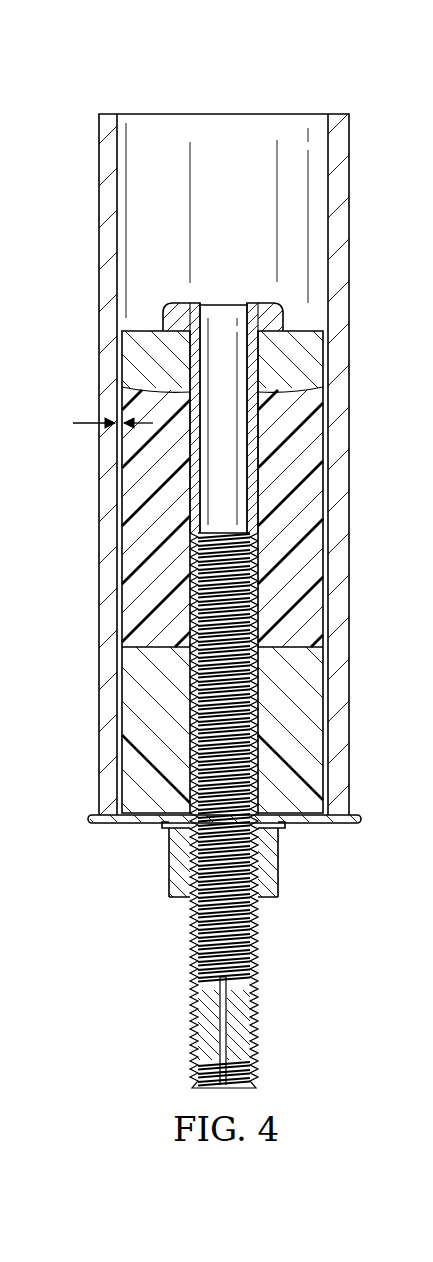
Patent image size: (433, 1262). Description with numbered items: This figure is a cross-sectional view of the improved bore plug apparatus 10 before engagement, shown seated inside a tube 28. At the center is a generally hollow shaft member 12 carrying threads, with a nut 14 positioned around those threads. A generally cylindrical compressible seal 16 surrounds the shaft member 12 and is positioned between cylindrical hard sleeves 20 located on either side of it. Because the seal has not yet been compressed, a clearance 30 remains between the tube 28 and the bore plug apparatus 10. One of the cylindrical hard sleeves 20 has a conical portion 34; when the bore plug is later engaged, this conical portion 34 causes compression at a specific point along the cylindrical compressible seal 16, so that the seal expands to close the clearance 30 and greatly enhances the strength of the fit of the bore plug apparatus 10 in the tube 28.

The bore plug apparatus 10 is at (88, 65).
The shaft member 12 is at (190, 1012).
The nut 14 is at (169, 858).
The cylindrical compressible seal 16 is at (133, 600).
The cylindrical hard sleeve 20 is at (143, 337).
The tube 28 is at (99, 209).
The clearance 30 is at (77, 425).
The conical portion 34 is at (296, 394).